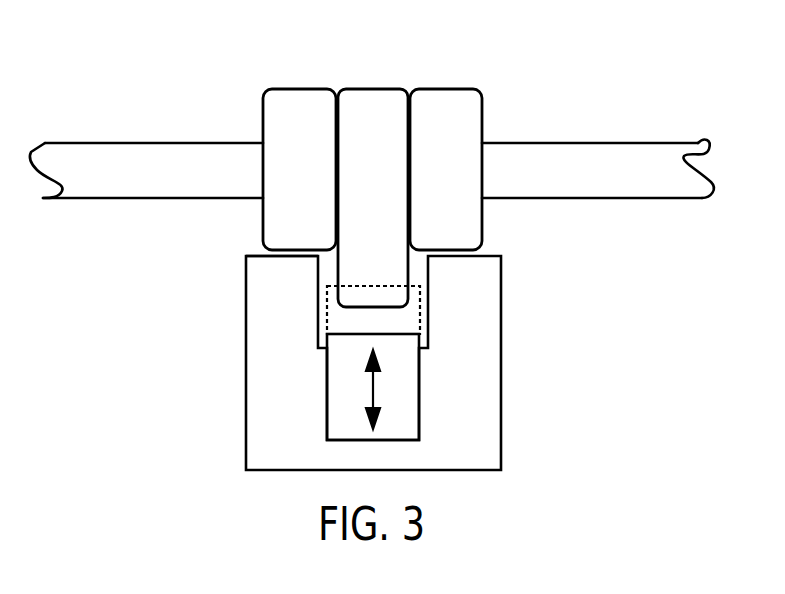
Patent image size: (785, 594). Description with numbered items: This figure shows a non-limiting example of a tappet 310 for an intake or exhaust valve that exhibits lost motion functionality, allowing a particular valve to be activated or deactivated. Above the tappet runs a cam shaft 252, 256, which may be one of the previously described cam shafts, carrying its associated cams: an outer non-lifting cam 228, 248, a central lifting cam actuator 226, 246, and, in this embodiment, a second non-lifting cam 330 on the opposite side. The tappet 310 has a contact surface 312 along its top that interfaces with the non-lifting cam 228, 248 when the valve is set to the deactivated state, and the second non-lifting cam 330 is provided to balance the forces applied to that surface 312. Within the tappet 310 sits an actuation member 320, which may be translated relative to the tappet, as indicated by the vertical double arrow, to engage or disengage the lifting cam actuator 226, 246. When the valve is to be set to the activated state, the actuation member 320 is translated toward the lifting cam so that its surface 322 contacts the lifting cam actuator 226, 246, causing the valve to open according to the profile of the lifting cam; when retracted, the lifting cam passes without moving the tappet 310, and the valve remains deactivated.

The cam shaft 252 is at (372, 152).
The cam shaft 256 is at (143, 158).
The non-lifting cam 228 is at (294, 144).
The non-lifting cam 248 is at (288, 105).
The lifting cam actuator 226 is at (373, 173).
The lifting cam actuator 246 is at (375, 105).
The second non-lifting cam 330 is at (454, 105).
The tappet 310 is at (265, 301).
The contact surface 312 is at (258, 253).
The actuation member 320 is at (345, 382).
The surface 322 is at (400, 334).